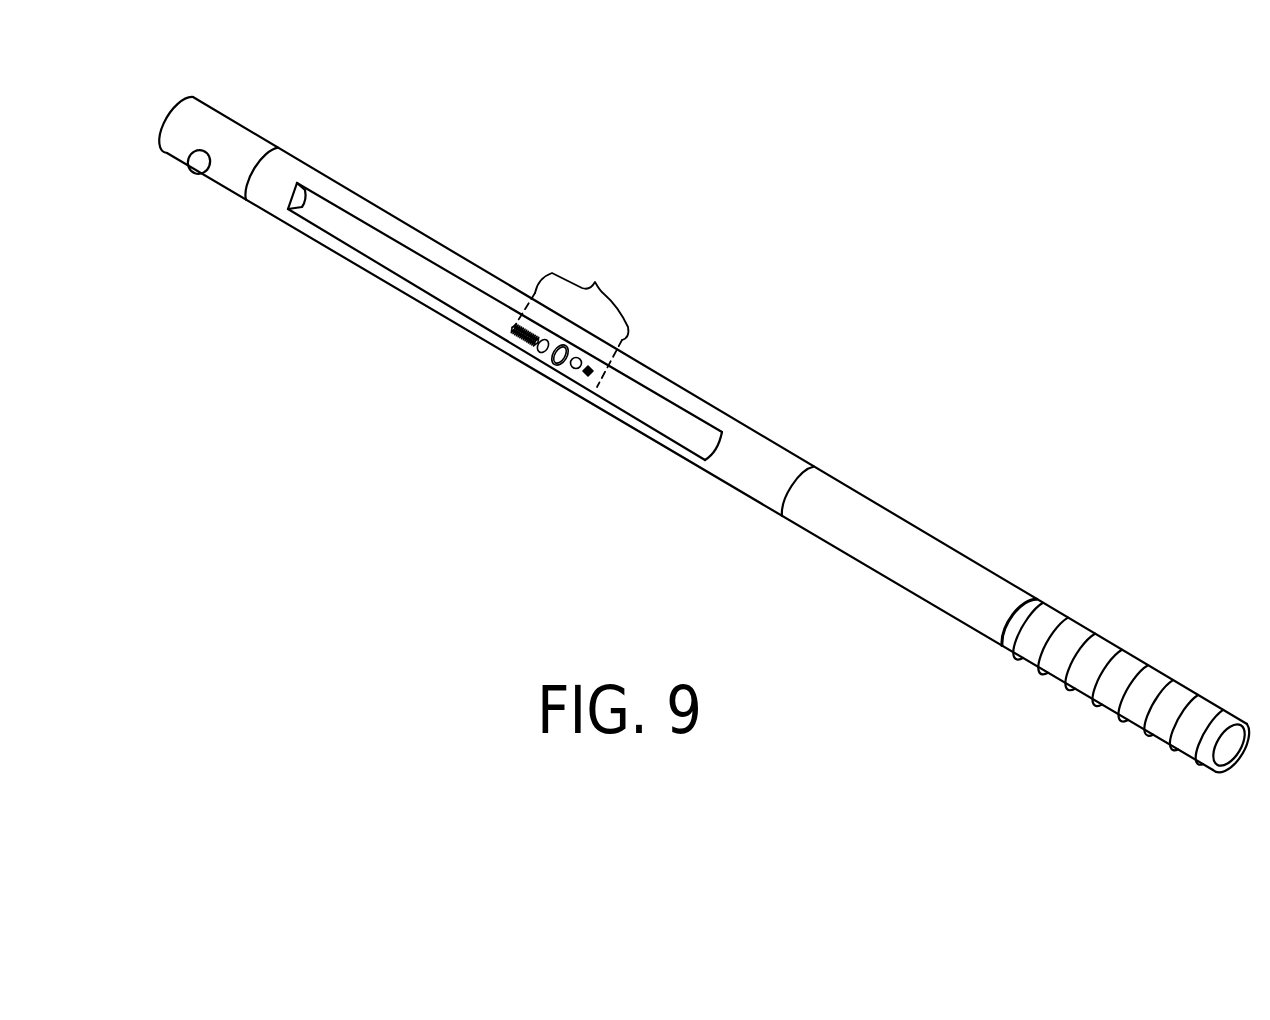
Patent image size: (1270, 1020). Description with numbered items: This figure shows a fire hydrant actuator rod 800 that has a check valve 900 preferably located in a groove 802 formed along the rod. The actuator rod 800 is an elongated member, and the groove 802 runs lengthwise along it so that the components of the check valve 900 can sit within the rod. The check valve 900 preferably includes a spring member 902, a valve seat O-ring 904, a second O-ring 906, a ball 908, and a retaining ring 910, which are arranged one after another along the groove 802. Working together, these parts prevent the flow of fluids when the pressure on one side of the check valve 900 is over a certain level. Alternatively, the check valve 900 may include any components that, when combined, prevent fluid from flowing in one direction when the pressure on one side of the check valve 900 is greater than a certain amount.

The actuator rod 800 is at (940, 350).
The groove 802 is at (467, 296).
The check valve 900 is at (585, 315).
The spring member 902 is at (510, 342).
The valve seat O-ring 904 is at (533, 358).
The second O-ring 906 is at (553, 367).
The ball 908 is at (570, 375).
The retaining ring 910 is at (582, 375).